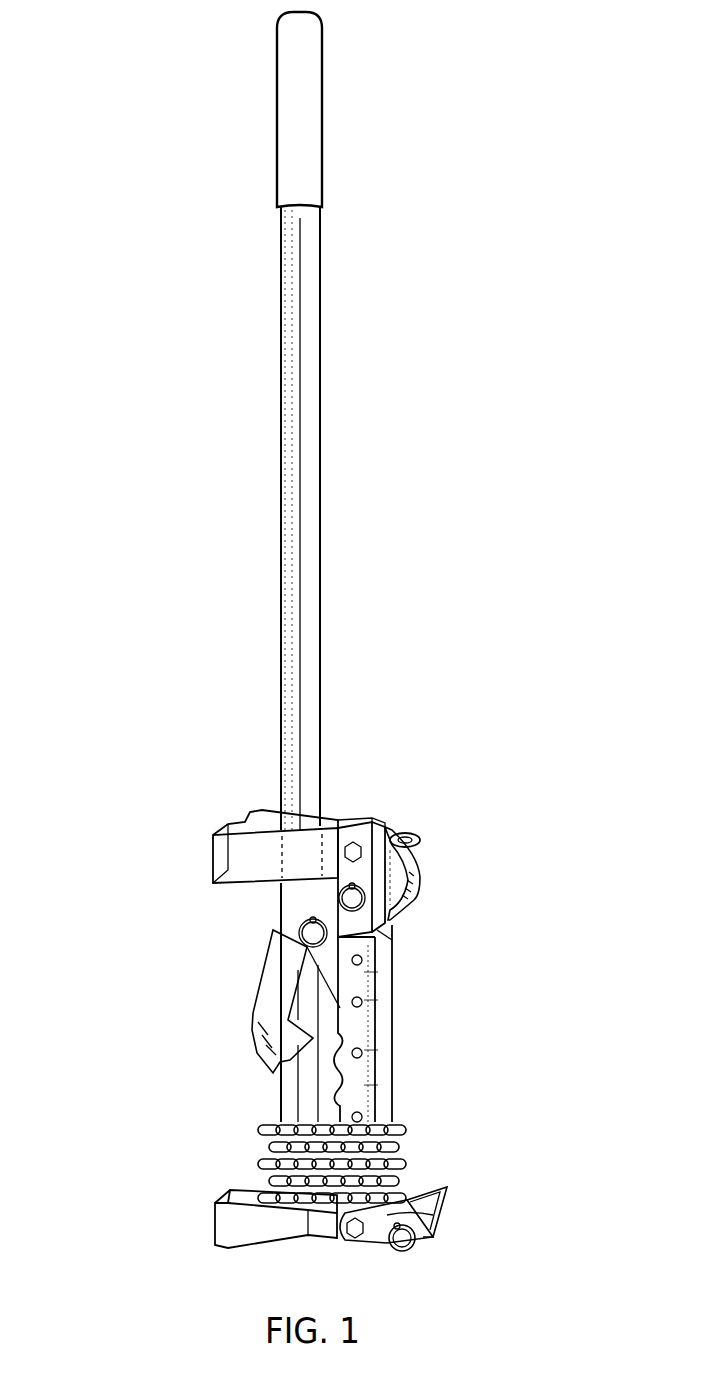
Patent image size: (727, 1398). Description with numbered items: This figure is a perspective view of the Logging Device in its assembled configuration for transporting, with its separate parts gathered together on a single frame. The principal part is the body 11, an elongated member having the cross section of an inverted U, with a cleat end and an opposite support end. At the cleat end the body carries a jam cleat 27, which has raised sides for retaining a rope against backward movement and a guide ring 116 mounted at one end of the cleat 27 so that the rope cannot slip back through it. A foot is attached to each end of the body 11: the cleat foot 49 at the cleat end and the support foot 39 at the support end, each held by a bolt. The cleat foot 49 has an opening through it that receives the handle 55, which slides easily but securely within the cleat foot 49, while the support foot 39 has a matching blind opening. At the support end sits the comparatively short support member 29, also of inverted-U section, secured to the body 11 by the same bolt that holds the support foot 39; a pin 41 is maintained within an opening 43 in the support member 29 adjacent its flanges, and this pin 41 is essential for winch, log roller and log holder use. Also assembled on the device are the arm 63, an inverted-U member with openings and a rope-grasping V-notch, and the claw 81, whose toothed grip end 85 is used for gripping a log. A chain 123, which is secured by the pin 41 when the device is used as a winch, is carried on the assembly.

The grip end 85 is at (277, 127).
The handle 55 is at (280, 465).
The cleat foot 49 is at (212, 857).
The guide ring 116 is at (420, 838).
The cleat 27 is at (413, 872).
The body 11 is at (385, 935).
The claw 81 is at (253, 1015).
The arm 63 is at (393, 1022).
The chain 123 is at (410, 1140).
The pin 41 is at (417, 1190).
The support foot 39 is at (215, 1213).
The support member 29 is at (448, 1207).
The opening 43 is at (440, 1222).